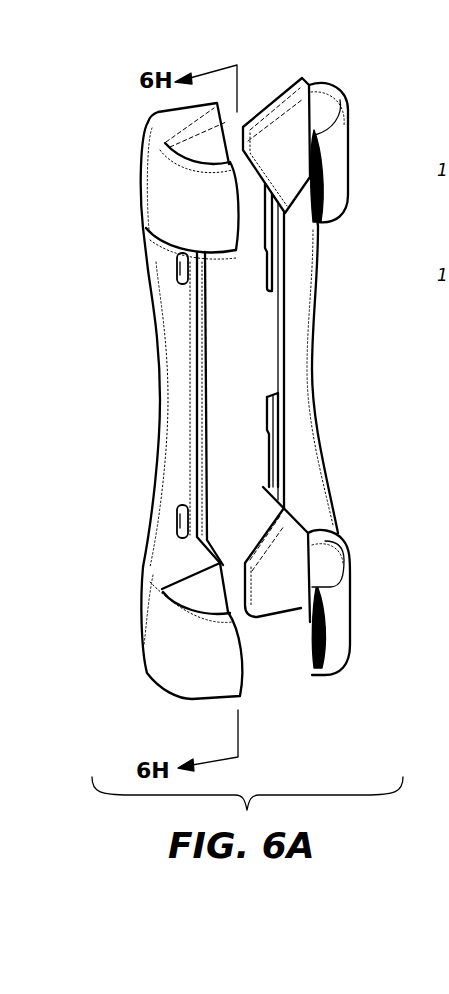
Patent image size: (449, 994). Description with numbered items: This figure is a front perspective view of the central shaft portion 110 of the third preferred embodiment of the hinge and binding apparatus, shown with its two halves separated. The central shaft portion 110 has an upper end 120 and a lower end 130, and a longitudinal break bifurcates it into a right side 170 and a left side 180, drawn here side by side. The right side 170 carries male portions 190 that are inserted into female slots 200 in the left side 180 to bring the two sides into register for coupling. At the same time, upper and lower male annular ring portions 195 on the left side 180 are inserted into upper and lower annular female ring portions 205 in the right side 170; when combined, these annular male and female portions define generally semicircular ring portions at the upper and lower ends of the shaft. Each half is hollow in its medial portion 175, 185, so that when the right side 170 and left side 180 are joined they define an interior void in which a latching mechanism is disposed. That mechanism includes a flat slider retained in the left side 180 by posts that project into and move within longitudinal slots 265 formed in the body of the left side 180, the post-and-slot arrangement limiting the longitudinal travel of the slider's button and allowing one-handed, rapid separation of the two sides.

The central shaft portion 110 is at (356, 86).
The upper end 120 is at (365, 161).
The lower end 130 is at (131, 659).
The right side 170 is at (312, 485).
The medial portion 175 is at (300, 367).
The left side 180 is at (165, 490).
The medial portion 185 is at (177, 337).
The male portions 190 is at (267, 122).
The male annular ring portions 195 is at (212, 222).
The female slots 200 is at (228, 106).
The female ring portions 205 is at (310, 213).
The longitudinal slots 265 is at (177, 268).